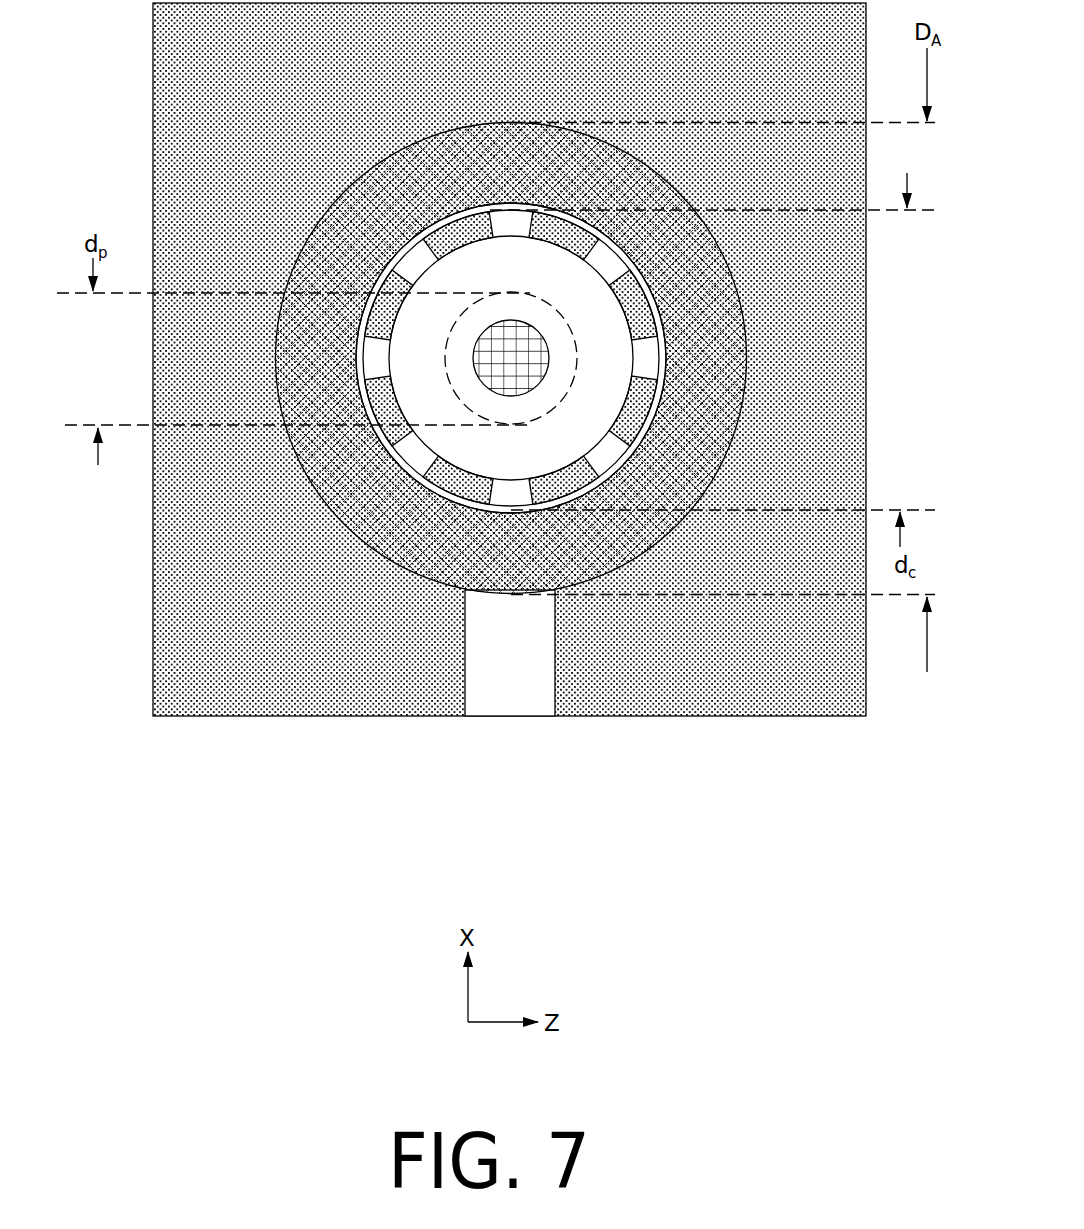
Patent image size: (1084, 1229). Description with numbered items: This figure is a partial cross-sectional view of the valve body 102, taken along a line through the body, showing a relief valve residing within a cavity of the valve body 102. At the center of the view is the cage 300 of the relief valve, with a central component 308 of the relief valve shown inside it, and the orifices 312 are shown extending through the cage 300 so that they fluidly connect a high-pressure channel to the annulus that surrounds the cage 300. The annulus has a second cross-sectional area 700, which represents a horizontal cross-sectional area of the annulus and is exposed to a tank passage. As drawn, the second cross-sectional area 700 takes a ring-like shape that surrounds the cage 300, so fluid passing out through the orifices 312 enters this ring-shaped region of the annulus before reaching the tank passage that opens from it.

The valve body 102 is at (509, 359).
The second cross-sectional area 700 is at (494, 380).
The central conductor 308 is at (552, 358).
The orifices 312 is at (401, 445).
The cage 300 is at (423, 489).